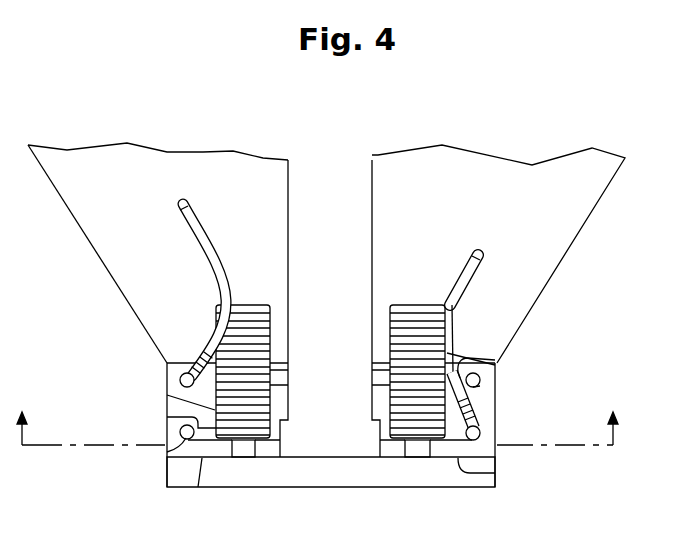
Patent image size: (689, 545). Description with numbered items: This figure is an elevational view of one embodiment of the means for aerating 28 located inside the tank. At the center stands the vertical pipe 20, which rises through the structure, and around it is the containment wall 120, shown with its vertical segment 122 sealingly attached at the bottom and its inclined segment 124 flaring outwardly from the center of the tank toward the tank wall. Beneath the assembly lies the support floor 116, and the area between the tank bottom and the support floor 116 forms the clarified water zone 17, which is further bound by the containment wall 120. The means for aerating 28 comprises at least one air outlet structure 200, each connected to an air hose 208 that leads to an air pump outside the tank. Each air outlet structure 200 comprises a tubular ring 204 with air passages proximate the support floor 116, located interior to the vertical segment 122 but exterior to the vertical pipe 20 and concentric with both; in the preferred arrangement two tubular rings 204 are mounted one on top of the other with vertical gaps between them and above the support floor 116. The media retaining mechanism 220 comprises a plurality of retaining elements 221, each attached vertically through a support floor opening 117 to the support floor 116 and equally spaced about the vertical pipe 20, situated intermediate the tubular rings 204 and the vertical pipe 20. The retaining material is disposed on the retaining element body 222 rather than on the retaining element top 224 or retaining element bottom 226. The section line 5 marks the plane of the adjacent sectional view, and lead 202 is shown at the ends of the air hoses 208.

The section line 5- 5 is at (320, 408).
The clarified water zone 17 is at (363, 475).
The vertical pipe 20 is at (372, 195).
The means for aerating 28 is at (583, 358).
The support floor 116 is at (495, 473).
The support floor opening 117 is at (242, 458).
The containment wall 120 is at (127, 302).
The vertical segment 122 is at (165, 370).
The inclined segment 124 is at (100, 263).
The air outlet structure 200 is at (167, 417).
The lead wire end 202 is at (198, 212).
The tubular ring 204 is at (167, 452).
The air hose 208 is at (212, 222).
The media retaining mechanism 220 is at (215, 402).
The retaining element 221 is at (215, 410).
The retaining element body 222 is at (242, 348).
The retaining element top 224 is at (248, 303).
The retaining element bottom 226 is at (202, 458).